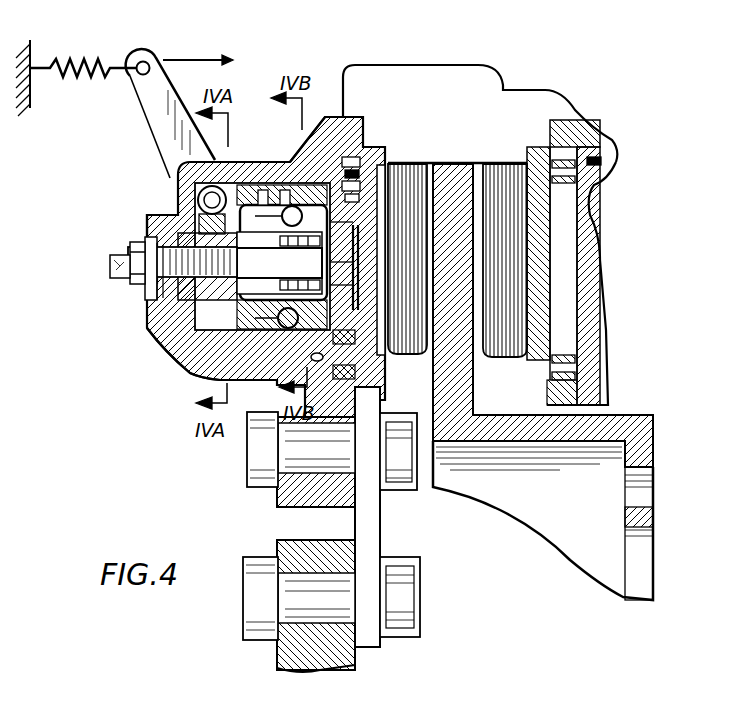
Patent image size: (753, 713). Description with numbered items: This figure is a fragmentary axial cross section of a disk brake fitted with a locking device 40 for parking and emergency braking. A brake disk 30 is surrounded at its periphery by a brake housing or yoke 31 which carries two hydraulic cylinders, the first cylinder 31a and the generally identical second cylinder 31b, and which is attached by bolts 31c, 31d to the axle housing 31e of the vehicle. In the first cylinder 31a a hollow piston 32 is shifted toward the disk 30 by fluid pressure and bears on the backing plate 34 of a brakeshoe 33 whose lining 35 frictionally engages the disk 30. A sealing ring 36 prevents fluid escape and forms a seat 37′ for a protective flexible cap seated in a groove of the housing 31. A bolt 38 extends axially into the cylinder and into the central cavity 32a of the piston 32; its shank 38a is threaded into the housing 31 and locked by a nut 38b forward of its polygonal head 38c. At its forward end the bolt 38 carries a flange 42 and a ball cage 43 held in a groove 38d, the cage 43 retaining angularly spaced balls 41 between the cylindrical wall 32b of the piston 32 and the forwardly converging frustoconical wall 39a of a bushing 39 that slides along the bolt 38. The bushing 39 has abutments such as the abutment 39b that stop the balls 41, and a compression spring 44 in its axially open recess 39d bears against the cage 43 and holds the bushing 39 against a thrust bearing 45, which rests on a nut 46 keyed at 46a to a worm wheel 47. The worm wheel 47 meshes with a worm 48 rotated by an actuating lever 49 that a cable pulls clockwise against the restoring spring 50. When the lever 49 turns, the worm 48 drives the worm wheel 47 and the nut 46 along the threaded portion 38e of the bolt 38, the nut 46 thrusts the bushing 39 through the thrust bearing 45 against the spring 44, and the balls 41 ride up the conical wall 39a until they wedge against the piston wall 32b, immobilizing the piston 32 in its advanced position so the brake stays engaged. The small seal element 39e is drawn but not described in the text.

The brake disk 30 is at (447, 168).
The brake housing 31 is at (357, 120).
The hydraulic cylinder 31a is at (195, 372).
The hydraulic cylinder 31b is at (618, 176).
The bolt 31c is at (407, 490).
The bolt 31d is at (405, 576).
The axle housing 31e is at (340, 662).
The hollow piston 32 is at (255, 185).
The central cavity 32a is at (263, 200).
The cylindrical wall 32b is at (285, 200).
The brakeshoe 33 is at (398, 152).
The backing plate 34 is at (378, 322).
The lining 35 is at (417, 240).
The sealing ring 36 is at (312, 358).
The seat 37′ is at (356, 353).
The bolt 38 is at (178, 318).
The shank 38a is at (128, 280).
The nut 38b is at (128, 297).
The polygonal head 38c is at (110, 263).
The groove 38d is at (355, 262).
The threaded portion 38e is at (279, 263).
The bushing 39 is at (190, 340).
The frustoconical wall 39a is at (300, 273).
The abutment 39b is at (355, 222).
The recess 39d is at (355, 285).
The piston seal 39e is at (283, 237).
The locking device 40 is at (312, 192).
The balls 41 is at (308, 192).
The flange 42 is at (369, 267).
The ball cage 43 is at (356, 205).
The compression spring 44 is at (368, 267).
The thrust bearing 45 is at (185, 224).
The nut 46 is at (172, 303).
The key 46a is at (130, 250).
The worm wheel 47 is at (198, 207).
The worm 48 is at (198, 200).
The actuating lever 49 is at (143, 92).
The spring 50 is at (86, 58).